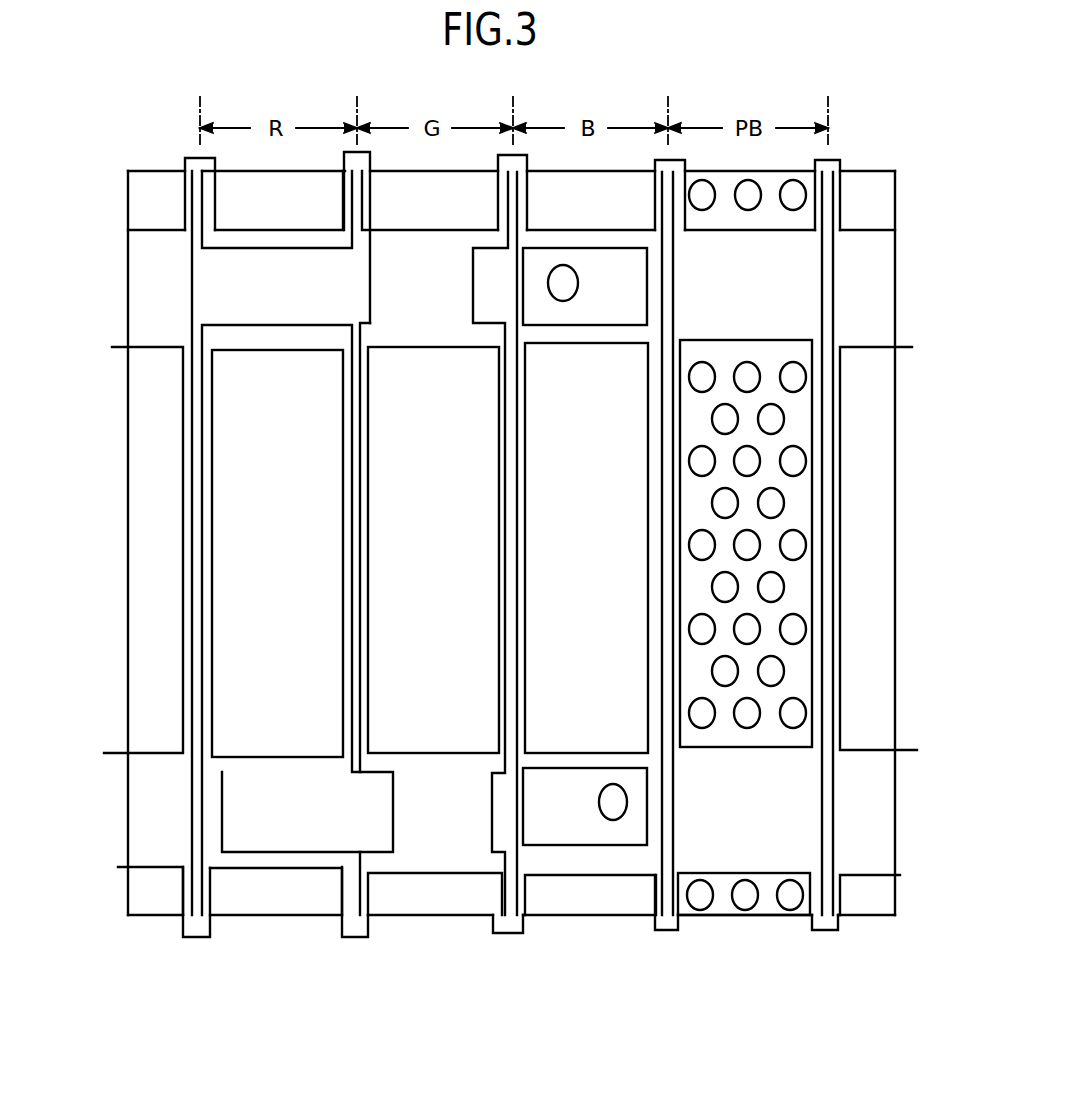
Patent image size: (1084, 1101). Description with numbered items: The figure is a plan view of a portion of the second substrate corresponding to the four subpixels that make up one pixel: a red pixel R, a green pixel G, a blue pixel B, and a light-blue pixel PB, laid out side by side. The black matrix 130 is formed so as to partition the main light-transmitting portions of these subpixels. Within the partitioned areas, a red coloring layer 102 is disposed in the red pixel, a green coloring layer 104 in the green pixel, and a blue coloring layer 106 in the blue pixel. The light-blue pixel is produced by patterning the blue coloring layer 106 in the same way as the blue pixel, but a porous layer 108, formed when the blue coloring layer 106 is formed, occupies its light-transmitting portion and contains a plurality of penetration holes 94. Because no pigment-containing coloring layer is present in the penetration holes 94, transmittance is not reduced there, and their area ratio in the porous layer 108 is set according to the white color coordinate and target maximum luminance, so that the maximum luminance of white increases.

The penetration holes 94 is at (742, 727).
The red coloring layer 102 is at (212, 695).
The green coloring layer 104 is at (455, 753).
The blue coloring layer 106 is at (558, 753).
The porous layer 108 is at (762, 748).
The black matrix 130 is at (183, 505).